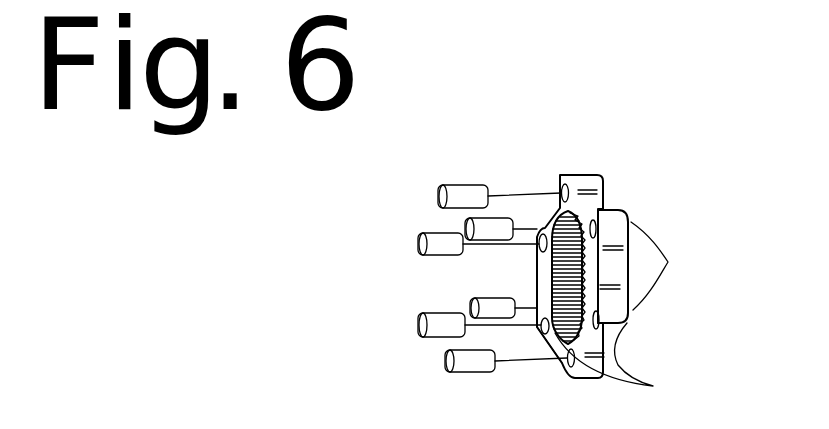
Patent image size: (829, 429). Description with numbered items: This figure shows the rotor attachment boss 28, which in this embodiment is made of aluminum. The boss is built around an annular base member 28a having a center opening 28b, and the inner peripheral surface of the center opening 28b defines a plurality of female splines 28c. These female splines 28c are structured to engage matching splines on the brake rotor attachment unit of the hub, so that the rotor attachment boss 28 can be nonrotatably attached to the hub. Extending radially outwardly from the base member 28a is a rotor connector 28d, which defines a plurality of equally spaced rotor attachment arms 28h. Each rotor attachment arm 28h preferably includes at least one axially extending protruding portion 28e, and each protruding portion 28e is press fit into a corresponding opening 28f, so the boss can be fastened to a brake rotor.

The rotor attachment boss 28 is at (566, 225).
The annular base member 28a is at (620, 227).
The center opening 28b is at (537, 328).
The female splines 28c is at (552, 272).
The rotor connector 28d is at (560, 202).
The axially extending protruding portion 28e is at (462, 190).
The opening 28f is at (653, 386).
The rotor attachment arm 28h is at (668, 262).